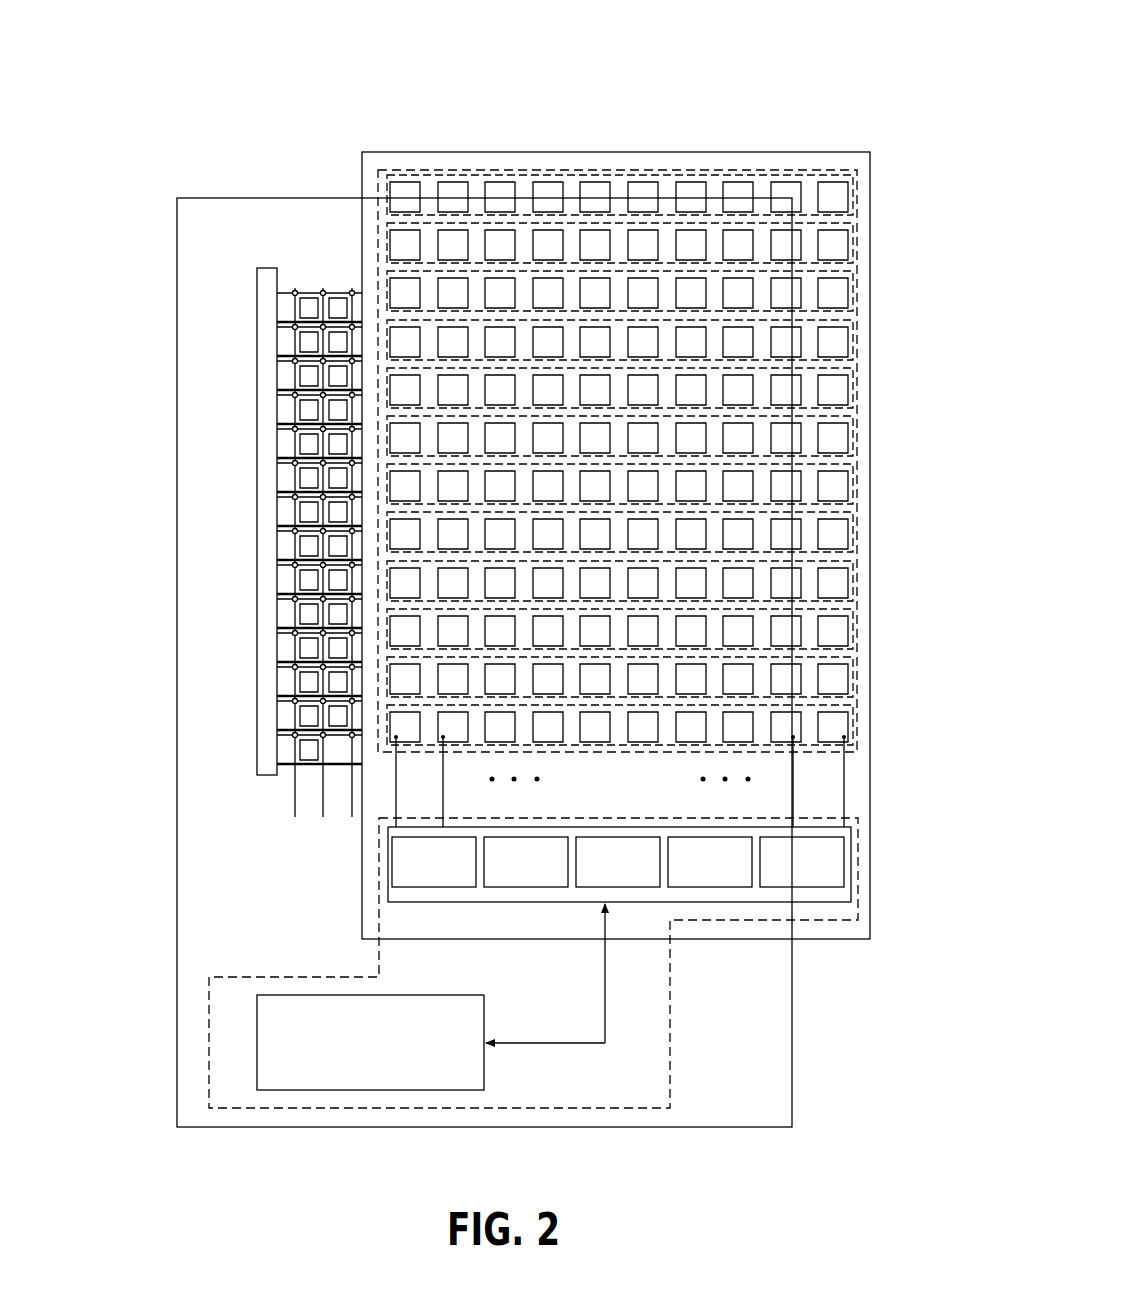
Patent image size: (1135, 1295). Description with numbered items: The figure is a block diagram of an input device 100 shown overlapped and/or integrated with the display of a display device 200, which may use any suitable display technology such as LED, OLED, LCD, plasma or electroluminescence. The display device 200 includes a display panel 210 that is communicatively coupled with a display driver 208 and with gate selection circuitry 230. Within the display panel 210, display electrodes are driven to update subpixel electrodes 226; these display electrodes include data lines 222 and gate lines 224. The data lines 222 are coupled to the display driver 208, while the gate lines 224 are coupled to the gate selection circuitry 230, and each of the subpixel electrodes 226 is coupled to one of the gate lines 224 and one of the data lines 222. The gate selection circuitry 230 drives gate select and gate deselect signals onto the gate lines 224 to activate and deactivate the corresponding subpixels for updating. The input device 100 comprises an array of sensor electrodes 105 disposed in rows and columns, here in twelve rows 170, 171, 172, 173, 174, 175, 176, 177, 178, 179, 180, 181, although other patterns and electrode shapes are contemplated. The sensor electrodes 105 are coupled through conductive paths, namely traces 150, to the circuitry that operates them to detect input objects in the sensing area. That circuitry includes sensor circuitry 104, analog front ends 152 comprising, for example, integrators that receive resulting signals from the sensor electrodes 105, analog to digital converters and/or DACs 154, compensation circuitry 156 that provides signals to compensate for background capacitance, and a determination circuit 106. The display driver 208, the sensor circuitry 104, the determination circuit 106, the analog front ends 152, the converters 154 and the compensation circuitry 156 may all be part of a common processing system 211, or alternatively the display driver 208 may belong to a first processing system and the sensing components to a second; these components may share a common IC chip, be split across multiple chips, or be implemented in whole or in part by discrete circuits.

The input device 100 is at (878, 40).
The sensor electrodes 105 is at (515, 168).
The traces 150 is at (846, 780).
The row 170 is at (850, 197).
The row 171 is at (850, 245).
The row 172 is at (850, 293).
The row 173 is at (850, 341).
The row 174 is at (850, 389).
The row 175 is at (850, 437).
The row 176 is at (850, 485).
The row 177 is at (850, 533).
The row 178 is at (850, 581).
The row 179 is at (850, 629).
The row 180 is at (850, 677).
The row 181 is at (850, 725).
The sensor circuitry 104 is at (413, 875).
The analog front ends 152 is at (505, 875).
The analog to digital converters 154 is at (597, 875).
The compensation circuitry 156 is at (689, 875).
The determination circuit 106 is at (781, 875).
The processing system 211 is at (858, 860).
The display driver 208 is at (347, 1058).
The display device 200 is at (148, 172).
The display panel 210 is at (223, 197).
The data lines 222 is at (296, 302).
The gate lines 224 is at (276, 303).
The subpixel electrodes 226 is at (306, 302).
The gate selection circuitry 230 is at (267, 352).